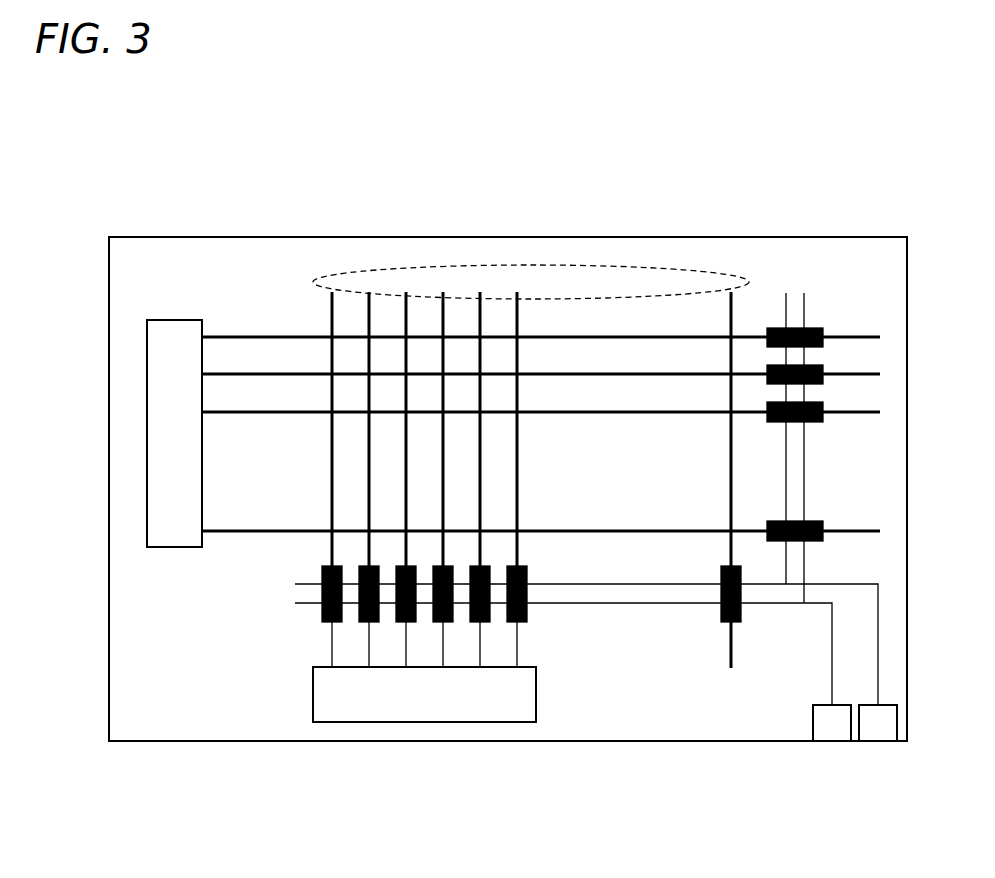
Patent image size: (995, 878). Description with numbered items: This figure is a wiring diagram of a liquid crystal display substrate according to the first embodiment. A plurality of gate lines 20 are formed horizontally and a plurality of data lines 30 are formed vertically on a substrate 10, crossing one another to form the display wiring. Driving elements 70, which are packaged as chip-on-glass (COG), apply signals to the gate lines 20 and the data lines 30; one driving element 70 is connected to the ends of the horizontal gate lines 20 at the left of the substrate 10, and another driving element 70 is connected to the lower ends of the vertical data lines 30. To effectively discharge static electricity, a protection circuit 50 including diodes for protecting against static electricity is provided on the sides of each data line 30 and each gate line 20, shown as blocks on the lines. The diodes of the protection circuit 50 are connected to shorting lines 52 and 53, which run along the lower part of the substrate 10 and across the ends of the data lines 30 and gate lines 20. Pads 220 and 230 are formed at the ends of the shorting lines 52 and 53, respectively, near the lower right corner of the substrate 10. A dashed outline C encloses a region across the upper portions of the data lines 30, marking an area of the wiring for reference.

The substrate 10 is at (113, 303).
The gate lines 20 is at (268, 337).
The data lines 30 is at (330, 456).
The protection circuit 50 is at (813, 327).
The shorting line 52 is at (600, 584).
The shorting line 53 is at (656, 603).
The driving elements 70 is at (173, 547).
The pad 220 is at (822, 741).
The pad 230 is at (887, 741).
The region C is at (498, 265).